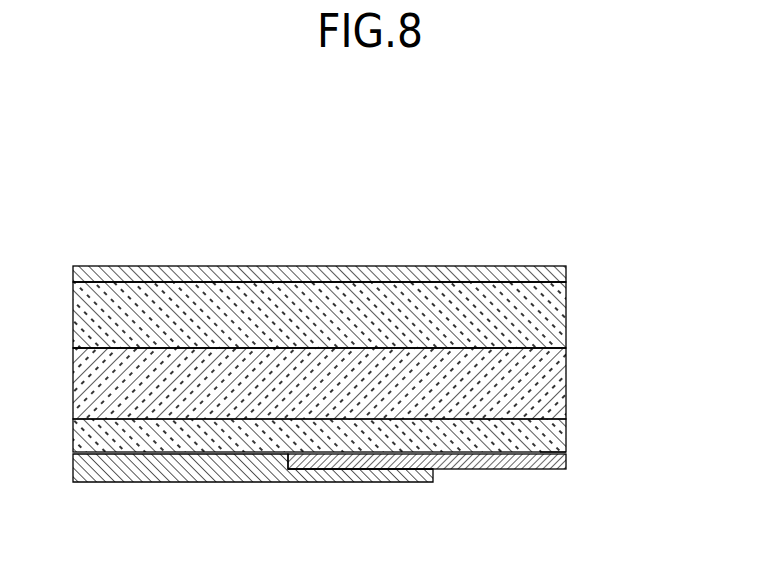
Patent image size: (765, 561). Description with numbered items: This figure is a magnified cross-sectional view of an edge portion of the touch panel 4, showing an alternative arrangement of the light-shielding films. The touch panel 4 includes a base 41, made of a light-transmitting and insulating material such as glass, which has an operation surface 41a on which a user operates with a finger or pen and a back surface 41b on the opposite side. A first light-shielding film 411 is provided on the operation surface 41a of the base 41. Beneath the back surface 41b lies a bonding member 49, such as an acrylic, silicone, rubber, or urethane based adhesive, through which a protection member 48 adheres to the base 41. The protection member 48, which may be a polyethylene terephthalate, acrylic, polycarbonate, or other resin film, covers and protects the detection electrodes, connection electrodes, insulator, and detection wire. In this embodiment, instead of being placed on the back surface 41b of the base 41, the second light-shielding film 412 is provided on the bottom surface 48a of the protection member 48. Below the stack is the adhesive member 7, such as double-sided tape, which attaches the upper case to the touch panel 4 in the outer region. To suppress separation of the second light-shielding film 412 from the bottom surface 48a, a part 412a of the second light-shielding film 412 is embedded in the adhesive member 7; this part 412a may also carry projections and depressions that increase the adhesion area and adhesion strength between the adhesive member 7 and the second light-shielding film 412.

The touch panel 4 is at (541, 146).
The first light-shielding film 411 is at (566, 274).
The base 41 is at (566, 314).
The operation surface 41a is at (528, 282).
The back surface 41b is at (540, 349).
The bonding member 49 is at (566, 390).
The protection member 48 is at (566, 436).
The bottom surface 48a is at (545, 457).
The second light-shielding film 412 is at (505, 462).
The part 412a is at (367, 460).
The adhesive member 7 is at (228, 478).